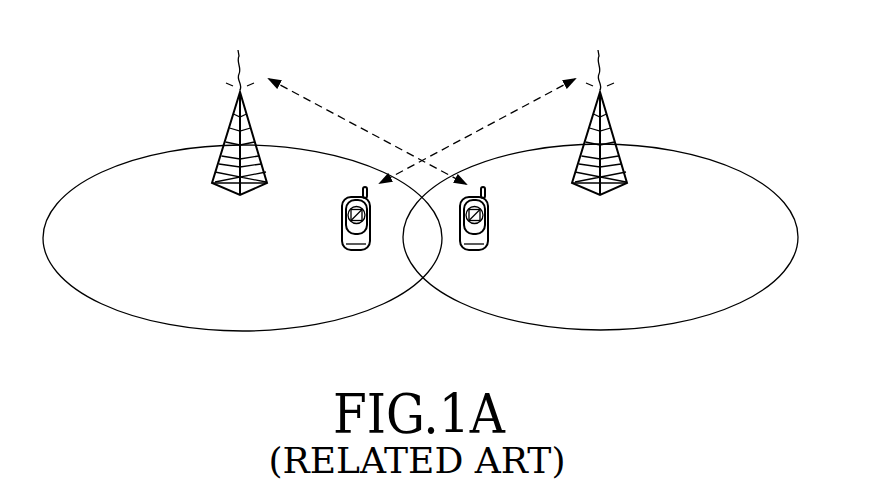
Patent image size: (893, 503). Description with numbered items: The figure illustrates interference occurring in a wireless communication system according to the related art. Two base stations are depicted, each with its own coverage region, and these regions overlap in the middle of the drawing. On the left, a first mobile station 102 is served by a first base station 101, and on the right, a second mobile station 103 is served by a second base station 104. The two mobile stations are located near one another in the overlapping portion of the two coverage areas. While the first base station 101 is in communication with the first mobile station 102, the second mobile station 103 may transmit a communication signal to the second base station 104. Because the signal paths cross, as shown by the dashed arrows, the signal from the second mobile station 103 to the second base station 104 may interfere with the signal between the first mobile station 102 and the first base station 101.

The BS1 101 is at (239, 123).
The MS1 102 is at (342, 232).
The MS2 103 is at (489, 216).
The BS2 104 is at (599, 123).